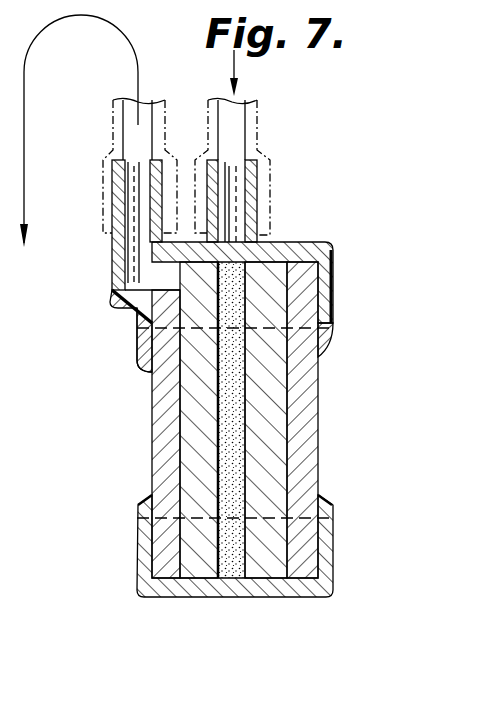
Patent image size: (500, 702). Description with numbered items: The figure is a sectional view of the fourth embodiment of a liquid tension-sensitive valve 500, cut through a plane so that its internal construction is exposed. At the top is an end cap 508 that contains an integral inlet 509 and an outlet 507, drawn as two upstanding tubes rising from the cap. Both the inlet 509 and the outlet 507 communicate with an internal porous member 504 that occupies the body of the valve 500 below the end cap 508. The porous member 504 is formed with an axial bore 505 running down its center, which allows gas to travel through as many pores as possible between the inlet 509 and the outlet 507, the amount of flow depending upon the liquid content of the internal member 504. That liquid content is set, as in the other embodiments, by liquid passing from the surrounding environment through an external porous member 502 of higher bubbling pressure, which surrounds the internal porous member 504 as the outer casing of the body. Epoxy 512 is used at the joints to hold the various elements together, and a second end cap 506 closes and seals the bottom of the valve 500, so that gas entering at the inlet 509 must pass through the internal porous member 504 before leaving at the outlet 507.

The liquid tension-sensitive valve 500 is at (132, 416).
The external porous member 502 is at (167, 477).
The internal porous member 504 is at (270, 420).
The axial bore 505 is at (230, 570).
The end cap 506 is at (305, 590).
The outlet 507 is at (117, 256).
The end cap 508 is at (332, 273).
The inlet 509 is at (258, 192).
The epoxy 512 is at (333, 333).